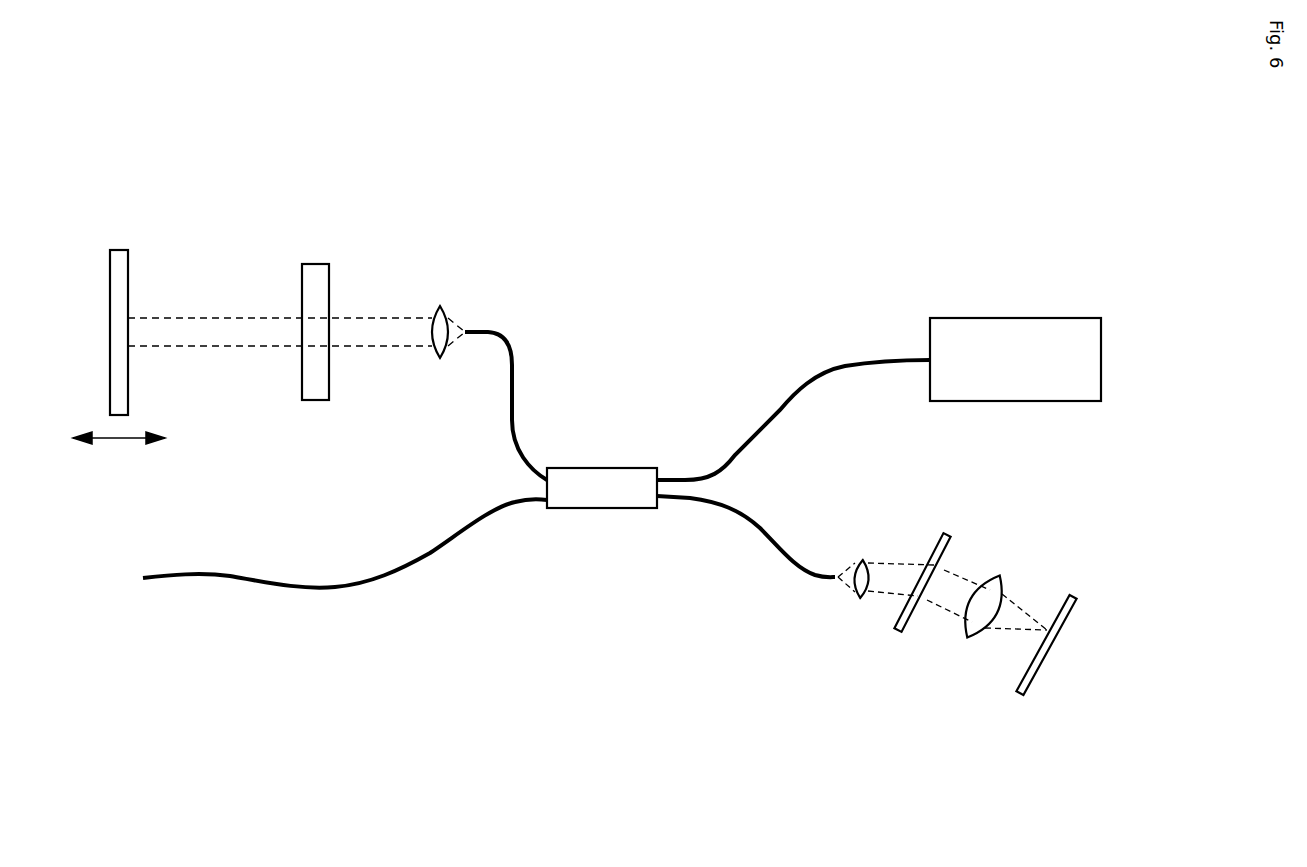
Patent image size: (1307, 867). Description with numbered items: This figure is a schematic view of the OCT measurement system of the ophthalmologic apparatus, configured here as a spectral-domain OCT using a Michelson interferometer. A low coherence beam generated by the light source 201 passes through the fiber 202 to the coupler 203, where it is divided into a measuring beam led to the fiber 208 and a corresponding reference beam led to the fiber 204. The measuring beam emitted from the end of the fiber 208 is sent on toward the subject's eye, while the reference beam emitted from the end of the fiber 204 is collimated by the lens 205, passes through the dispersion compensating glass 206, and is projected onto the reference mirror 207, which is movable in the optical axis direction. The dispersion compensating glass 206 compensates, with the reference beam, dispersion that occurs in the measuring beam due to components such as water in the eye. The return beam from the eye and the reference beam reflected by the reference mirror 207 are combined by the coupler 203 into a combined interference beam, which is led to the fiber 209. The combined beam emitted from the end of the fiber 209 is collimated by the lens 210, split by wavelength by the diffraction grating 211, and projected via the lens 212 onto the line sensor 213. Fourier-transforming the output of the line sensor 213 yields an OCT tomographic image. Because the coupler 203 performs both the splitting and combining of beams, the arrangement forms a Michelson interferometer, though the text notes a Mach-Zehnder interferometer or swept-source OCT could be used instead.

The light source 201 is at (1008, 318).
The fiber 202 is at (783, 400).
The coupler 203 is at (604, 468).
The fiber 204 is at (515, 368).
The lens 205 is at (440, 306).
The dispersion compensating glass 206 is at (316, 264).
The reference mirror 207 is at (120, 250).
The fiber 208 is at (453, 540).
The fiber 209 is at (728, 508).
The lens 210 is at (861, 560).
The diffraction grating 211 is at (900, 630).
The lens 212 is at (980, 638).
The line sensor 213 is at (1050, 636).